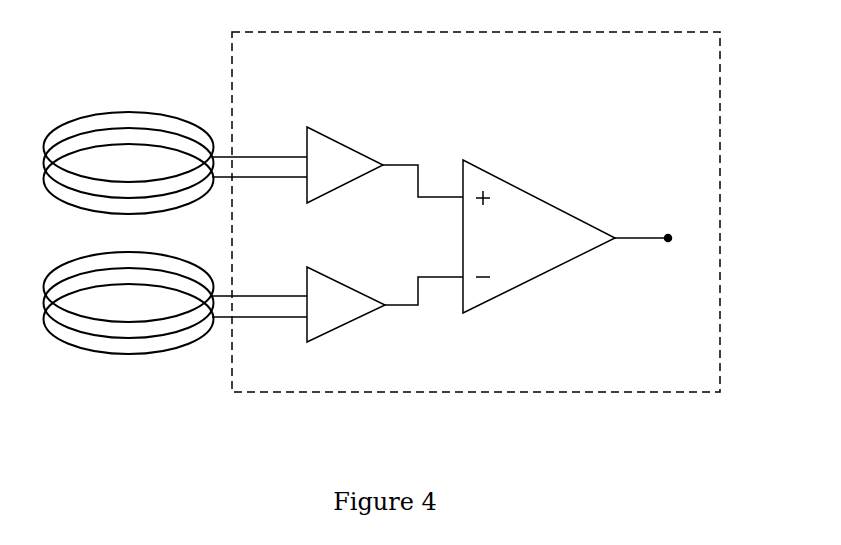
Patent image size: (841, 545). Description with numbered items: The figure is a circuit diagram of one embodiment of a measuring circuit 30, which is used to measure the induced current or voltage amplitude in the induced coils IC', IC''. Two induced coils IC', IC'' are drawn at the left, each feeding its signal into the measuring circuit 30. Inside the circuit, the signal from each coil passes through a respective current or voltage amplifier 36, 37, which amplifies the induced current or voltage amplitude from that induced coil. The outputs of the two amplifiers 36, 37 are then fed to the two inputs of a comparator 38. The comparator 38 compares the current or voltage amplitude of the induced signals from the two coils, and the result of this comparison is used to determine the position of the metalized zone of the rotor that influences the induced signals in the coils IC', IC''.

The measuring circuit 30 is at (577, 97).
The current or voltage amplifier 36 is at (348, 155).
The current or voltage amplifier 37 is at (325, 325).
The comparator 38 is at (547, 222).
The induced coil IC' is at (176, 126).
The induced coil IC'' is at (176, 329).